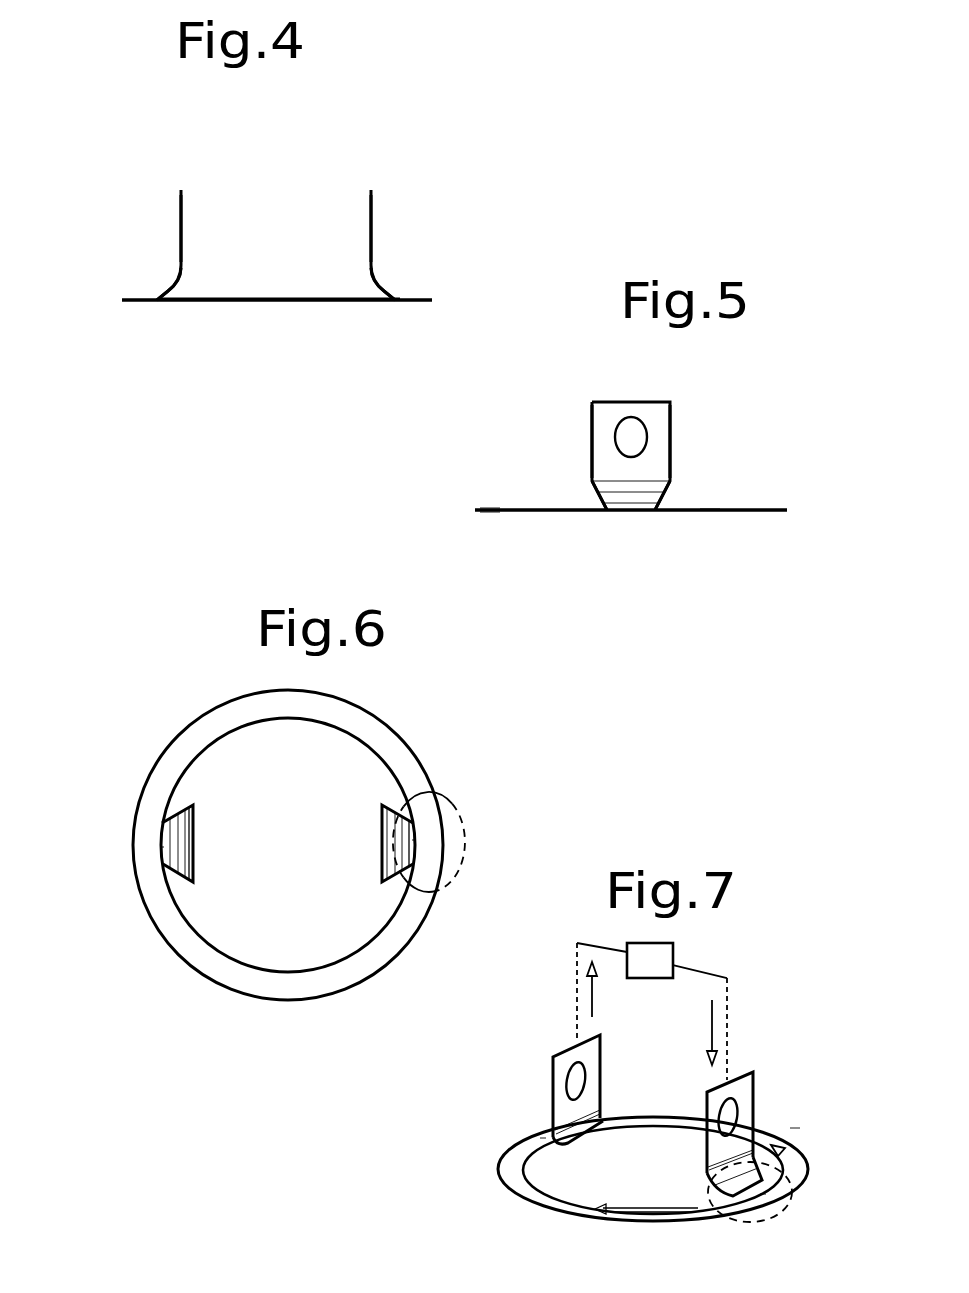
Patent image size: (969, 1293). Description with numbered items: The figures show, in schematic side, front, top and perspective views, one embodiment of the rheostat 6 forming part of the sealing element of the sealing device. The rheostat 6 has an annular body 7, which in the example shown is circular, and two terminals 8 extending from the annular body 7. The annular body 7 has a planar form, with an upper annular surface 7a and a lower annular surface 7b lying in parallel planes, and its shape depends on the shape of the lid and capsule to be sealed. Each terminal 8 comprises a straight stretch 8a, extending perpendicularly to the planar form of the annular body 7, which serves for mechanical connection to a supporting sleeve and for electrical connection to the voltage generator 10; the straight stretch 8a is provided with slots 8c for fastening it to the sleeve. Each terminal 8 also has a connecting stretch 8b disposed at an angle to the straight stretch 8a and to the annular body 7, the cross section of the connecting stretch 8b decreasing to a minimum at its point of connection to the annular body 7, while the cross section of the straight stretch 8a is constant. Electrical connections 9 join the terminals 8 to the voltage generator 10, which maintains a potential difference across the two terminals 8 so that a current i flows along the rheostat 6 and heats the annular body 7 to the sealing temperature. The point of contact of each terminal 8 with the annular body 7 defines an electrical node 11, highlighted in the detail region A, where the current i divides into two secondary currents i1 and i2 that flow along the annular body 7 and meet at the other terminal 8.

In FIG. 4, the rheostat 6 is at (392, 198).
In FIG. 5, the rheostat 6 is at (723, 428).
In FIG. 7, the rheostat 6 is at (790, 935).
In FIG. 4, the annular body 7 is at (422, 303).
In FIG. 5, the annular body 7 is at (787, 507).
In FIG. 6, the annular body 7 is at (178, 947).
In FIG. 7, the annular body 7 is at (547, 1205).
In FIG. 5, the upper annular surface 7a is at (488, 514).
In FIG. 5, the lower annular surface 7b is at (488, 506).
In FIG. 6, the lower annular surface 7b is at (199, 734).
In FIG. 7, the lower annular surface 7b is at (520, 1182).
In FIG. 4, the terminal 8 is at (172, 208).
In FIG. 5, the terminal 8 is at (588, 403).
In FIG. 6, the terminal 8 is at (180, 825).
In FIG. 7, the terminal 8 is at (548, 1093).
In FIG. 4, the straight stretch 8a is at (182, 222).
In FIG. 5, the straight stretch 8a is at (658, 416).
In FIG. 4, the connecting stretch 8b is at (165, 285).
In FIG. 5, the connecting stretch 8b is at (658, 497).
In FIG. 7, the connecting stretch 8b is at (568, 1142).
In FIG. 5, the slot 8c is at (630, 433).
In FIG. 7, the slot 8c is at (580, 1075).
In FIG. 7, the electrical connections 9 is at (600, 945).
In FIG. 7, the voltage generator 10 is at (673, 958).
In FIG. 6, the electrical node 11 is at (150, 847).
In FIG. 7, the electrical node 11 is at (535, 1137).
In FIG. 6, the detail region A is at (442, 801).
In FIG. 7, the detail region A is at (780, 1203).
In FIG. 7, the current i is at (588, 995).
In FIG. 7, the first secondary current i1 is at (783, 1152).
In FIG. 7, the second secondary current i2 is at (657, 1217).